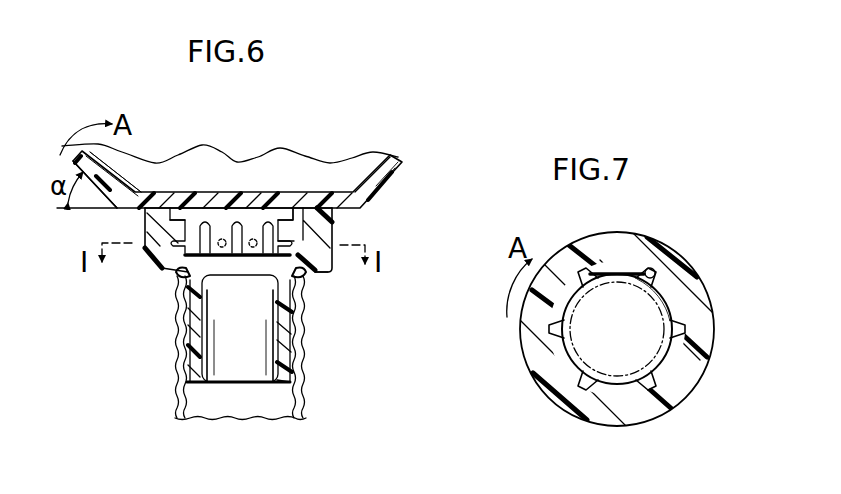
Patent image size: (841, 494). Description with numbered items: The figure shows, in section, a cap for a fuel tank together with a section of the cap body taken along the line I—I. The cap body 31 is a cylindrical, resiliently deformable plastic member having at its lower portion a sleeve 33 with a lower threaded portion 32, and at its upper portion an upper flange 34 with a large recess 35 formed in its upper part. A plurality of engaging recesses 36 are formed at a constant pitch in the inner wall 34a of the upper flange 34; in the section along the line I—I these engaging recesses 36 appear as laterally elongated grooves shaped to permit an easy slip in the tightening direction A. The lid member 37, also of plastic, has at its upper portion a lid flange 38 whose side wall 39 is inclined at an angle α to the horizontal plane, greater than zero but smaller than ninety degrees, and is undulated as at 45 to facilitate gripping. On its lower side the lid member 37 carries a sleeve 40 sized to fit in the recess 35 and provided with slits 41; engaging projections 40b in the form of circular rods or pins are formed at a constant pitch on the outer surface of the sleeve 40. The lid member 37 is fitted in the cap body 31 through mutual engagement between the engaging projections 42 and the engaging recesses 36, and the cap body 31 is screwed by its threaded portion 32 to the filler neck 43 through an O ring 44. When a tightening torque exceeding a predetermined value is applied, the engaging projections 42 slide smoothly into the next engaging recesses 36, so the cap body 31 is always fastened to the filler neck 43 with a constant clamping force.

In FIG. 6, the cap body 31 is at (324, 268).
In FIG. 7, the cap body 31 is at (669, 412).
In FIG. 6, the lower threaded portion 32 is at (192, 377).
In FIG. 6, the sleeve 33 is at (287, 343).
In FIG. 6, the upper flange 34 is at (160, 263).
In FIG. 7, the upper flange 34 is at (562, 385).
In FIG. 6, the inner wall 34a is at (284, 233).
In FIG. 7, the inner wall 34a is at (683, 353).
In FIG. 6, the recess 35 is at (236, 250).
In FIG. 6, the engaging recesses 36 is at (183, 278).
In FIG. 7, the engaging recesses 36 is at (654, 273).
In FIG. 6, the lid member 37 is at (181, 176).
In FIG. 6, the lid flange 38 is at (332, 177).
In FIG. 6, the side wall 39 is at (94, 182).
In FIG. 6, the sleeve 40 is at (216, 213).
In FIG. 7, the sleeve 40 is at (578, 275).
In FIG. 6, the engaging projections 40b is at (318, 214).
In FIG. 6, the slits 41 is at (190, 318).
In FIG. 7, the slits 41 is at (623, 277).
In FIG. 6, the engaging projections 42 is at (296, 244).
In FIG. 6, the filler neck 43 is at (304, 390).
In FIG. 6, the O ring 44 is at (302, 282).
In FIG. 6, the undulation 45 is at (248, 162).